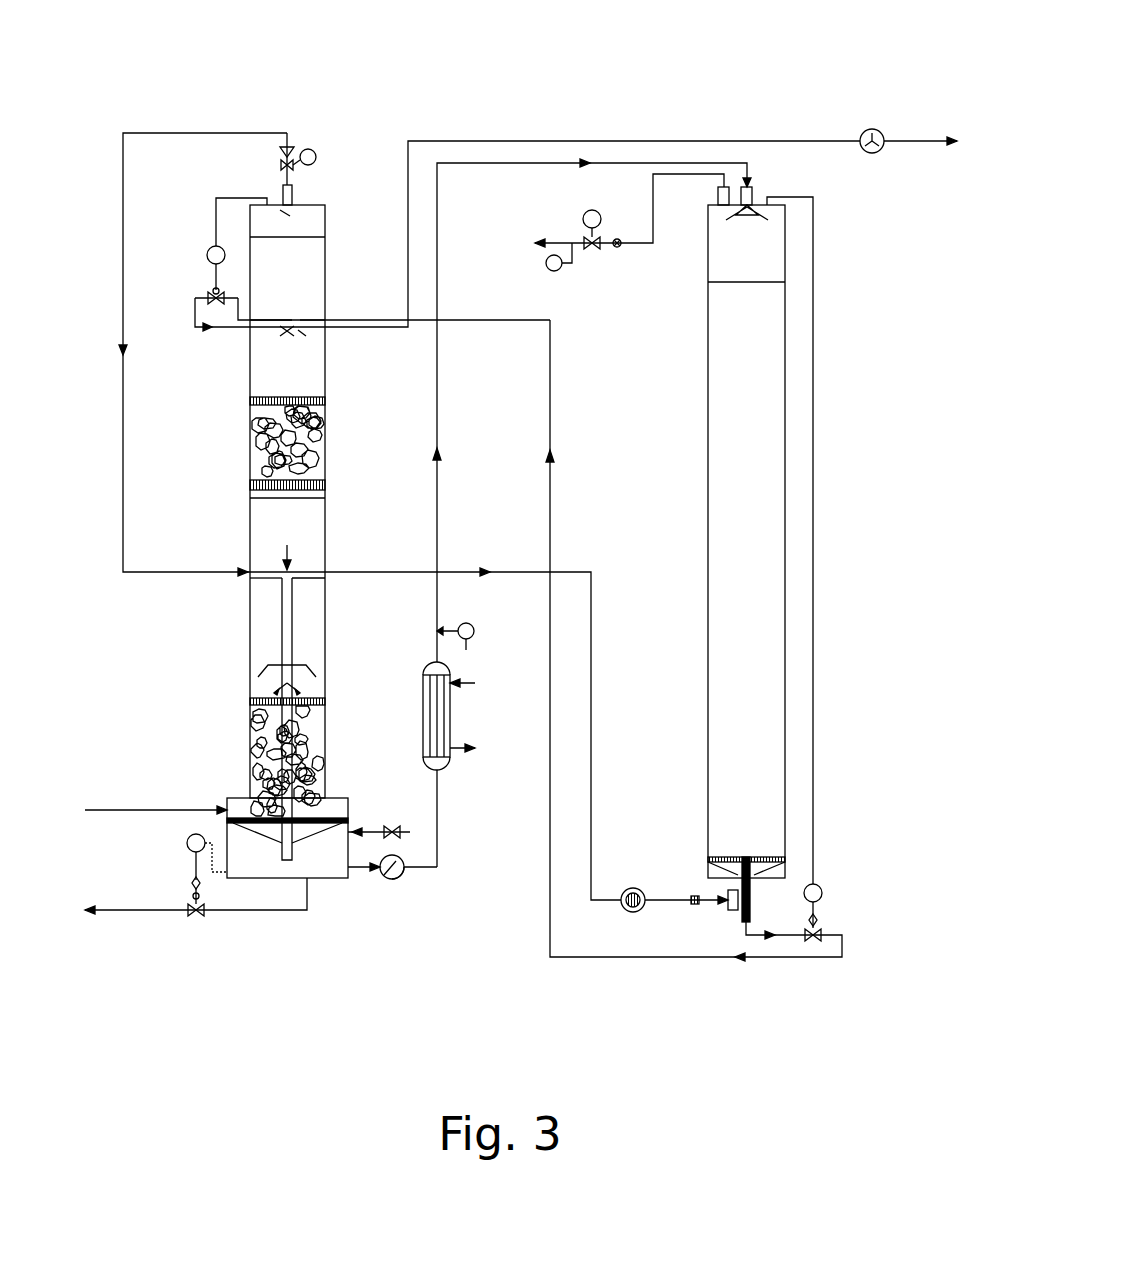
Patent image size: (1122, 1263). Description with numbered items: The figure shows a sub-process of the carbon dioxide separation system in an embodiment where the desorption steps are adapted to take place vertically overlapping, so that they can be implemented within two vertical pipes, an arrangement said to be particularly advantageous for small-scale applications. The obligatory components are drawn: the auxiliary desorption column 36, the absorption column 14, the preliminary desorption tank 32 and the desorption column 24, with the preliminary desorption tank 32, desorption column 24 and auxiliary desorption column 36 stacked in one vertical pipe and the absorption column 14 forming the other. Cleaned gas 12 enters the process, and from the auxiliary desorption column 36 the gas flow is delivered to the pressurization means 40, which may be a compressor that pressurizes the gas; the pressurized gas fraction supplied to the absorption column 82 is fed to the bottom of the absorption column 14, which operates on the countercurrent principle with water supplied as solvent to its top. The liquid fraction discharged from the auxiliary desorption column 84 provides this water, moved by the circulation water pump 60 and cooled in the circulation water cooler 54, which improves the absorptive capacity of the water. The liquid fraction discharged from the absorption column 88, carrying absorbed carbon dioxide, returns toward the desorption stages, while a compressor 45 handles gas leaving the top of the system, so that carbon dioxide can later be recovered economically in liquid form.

The cleaned gas 12 is at (130, 806).
The absorption column 14 is at (762, 650).
The desorption column 24 is at (273, 542).
The preliminary desorption tank 32 is at (278, 320).
The auxiliary desorption column 36 is at (222, 739).
The pressurization means 40 is at (628, 916).
The compressor 45 is at (849, 128).
The circulation water cooler 54 is at (442, 728).
The circulation water pump 60 is at (389, 880).
The pressurized gas fraction supplied to the absorption column 82 is at (592, 617).
The liquid fraction discharged from the auxiliary desorption column 84 is at (440, 848).
The liquid fraction discharged from the absorption column 88 is at (551, 487).